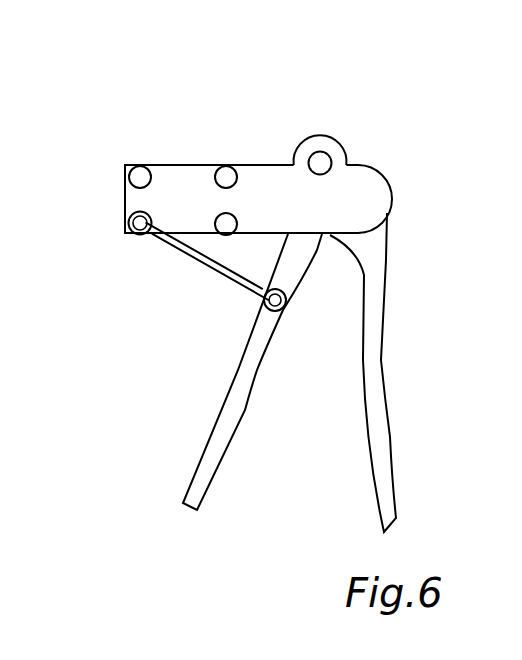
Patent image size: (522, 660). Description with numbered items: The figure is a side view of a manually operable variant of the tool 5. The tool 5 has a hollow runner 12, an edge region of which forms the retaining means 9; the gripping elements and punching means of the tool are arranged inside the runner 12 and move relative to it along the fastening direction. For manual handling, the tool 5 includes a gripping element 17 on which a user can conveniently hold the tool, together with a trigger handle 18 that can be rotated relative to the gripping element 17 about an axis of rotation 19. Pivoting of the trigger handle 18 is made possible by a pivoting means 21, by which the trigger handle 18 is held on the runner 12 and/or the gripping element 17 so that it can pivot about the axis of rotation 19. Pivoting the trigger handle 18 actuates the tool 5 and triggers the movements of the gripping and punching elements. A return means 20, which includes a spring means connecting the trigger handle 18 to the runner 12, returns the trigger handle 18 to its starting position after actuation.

The tool 5 is at (355, 109).
The retaining means 9 is at (125, 196).
The runner 12 is at (188, 175).
The gripping element 17 is at (375, 298).
The trigger handle 18 is at (230, 418).
The axis of rotation 19 is at (320, 163).
The return means 20 is at (191, 278).
The pivoting means 21 is at (340, 112).